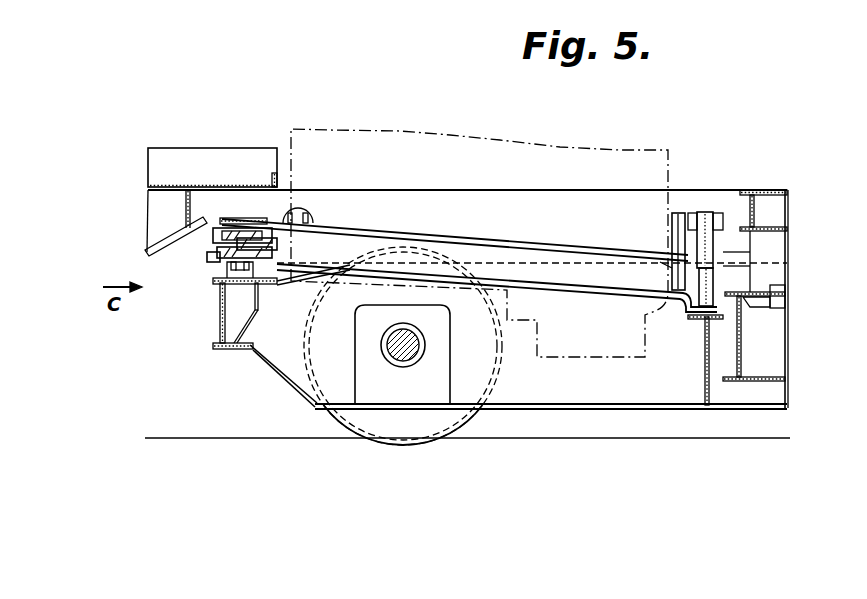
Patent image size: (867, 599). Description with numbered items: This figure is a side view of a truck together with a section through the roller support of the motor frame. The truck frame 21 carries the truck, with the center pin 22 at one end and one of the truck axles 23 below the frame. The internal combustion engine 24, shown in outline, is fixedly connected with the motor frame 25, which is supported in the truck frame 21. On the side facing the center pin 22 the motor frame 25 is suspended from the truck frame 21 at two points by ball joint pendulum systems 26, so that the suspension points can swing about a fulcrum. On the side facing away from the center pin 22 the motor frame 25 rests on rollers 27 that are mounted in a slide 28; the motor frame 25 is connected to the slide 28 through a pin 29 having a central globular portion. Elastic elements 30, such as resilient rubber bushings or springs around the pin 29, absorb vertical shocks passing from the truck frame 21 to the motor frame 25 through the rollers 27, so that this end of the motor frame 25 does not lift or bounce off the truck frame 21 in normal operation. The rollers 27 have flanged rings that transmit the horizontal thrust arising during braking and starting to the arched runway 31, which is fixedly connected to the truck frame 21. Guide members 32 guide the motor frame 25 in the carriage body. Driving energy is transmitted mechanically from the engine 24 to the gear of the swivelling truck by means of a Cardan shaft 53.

The truck frame 21 is at (220, 343).
The center pin 22 is at (773, 245).
The truck axle 23 is at (393, 356).
The internal combustion engine 24 is at (335, 134).
The motor frame 25 is at (626, 270).
The ball joint pendulum systems 26 is at (706, 213).
The rollers 27 is at (228, 266).
The slide 28 is at (209, 261).
The pin 29 is at (277, 240).
The elastic elements 30 is at (254, 231).
The arched runway 31 is at (218, 285).
The guide members 32 is at (299, 218).
The Cardan shaft 53 is at (770, 258).